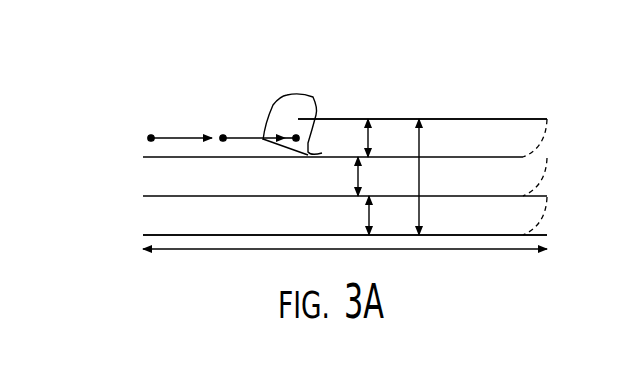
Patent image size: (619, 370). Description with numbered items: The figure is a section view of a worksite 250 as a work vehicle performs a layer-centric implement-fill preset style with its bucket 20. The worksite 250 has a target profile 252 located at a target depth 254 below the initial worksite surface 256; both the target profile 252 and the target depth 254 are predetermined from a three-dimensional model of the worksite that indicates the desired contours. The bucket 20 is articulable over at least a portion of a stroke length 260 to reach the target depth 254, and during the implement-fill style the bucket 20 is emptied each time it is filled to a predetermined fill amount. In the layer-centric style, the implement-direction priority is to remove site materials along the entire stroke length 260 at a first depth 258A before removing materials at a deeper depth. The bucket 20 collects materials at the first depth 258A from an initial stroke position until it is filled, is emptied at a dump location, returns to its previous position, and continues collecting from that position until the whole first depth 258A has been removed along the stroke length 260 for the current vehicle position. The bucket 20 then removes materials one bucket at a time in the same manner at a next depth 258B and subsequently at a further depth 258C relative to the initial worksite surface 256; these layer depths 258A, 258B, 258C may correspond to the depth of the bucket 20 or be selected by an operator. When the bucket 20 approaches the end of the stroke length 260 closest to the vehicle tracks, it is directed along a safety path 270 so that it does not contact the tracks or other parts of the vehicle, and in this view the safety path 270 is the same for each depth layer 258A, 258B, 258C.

The worksite 250 is at (150, 90).
The bucket 20 is at (272, 121).
The target profile 252 is at (220, 236).
The target depth 254 is at (420, 176).
The initial worksite surface 256 is at (461, 119).
The first depth 258A is at (373, 140).
The depth 258B is at (355, 178).
The depth 258C is at (366, 215).
The stroke length 260 is at (443, 250).
The safety path 270 is at (549, 138).